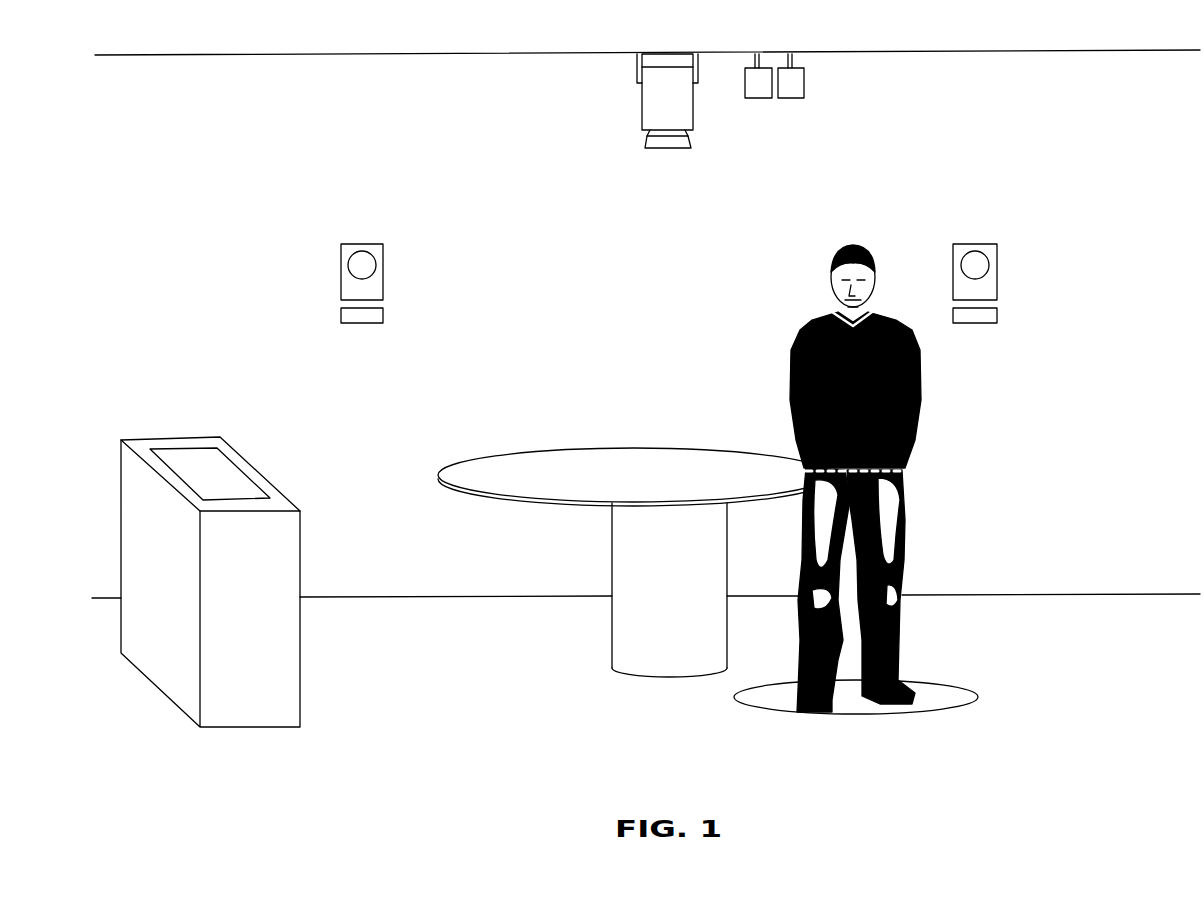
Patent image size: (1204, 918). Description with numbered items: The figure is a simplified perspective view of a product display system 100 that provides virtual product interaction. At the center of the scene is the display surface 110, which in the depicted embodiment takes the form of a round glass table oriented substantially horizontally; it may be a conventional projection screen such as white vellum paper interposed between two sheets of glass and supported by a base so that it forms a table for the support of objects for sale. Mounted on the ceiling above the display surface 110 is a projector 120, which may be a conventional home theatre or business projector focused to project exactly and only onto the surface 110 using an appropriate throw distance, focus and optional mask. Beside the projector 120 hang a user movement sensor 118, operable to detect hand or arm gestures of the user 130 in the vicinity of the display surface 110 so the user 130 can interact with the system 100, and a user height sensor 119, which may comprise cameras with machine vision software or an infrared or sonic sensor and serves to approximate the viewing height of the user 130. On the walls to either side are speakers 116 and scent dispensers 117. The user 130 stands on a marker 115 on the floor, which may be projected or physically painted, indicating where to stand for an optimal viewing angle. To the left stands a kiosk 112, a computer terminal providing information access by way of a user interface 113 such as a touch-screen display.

The product display system 100 is at (1126, 173).
The display surface 110 is at (721, 452).
The kiosk 112 is at (258, 471).
The user interface 113 is at (178, 447).
The marker 115 is at (950, 688).
The speakers 116 is at (341, 275).
The scent dispensers 117 is at (341, 316).
The user movement sensor 118 is at (746, 82).
The user height sensor 119 is at (804, 83).
The projector 120 is at (647, 105).
The user 130 is at (782, 284).